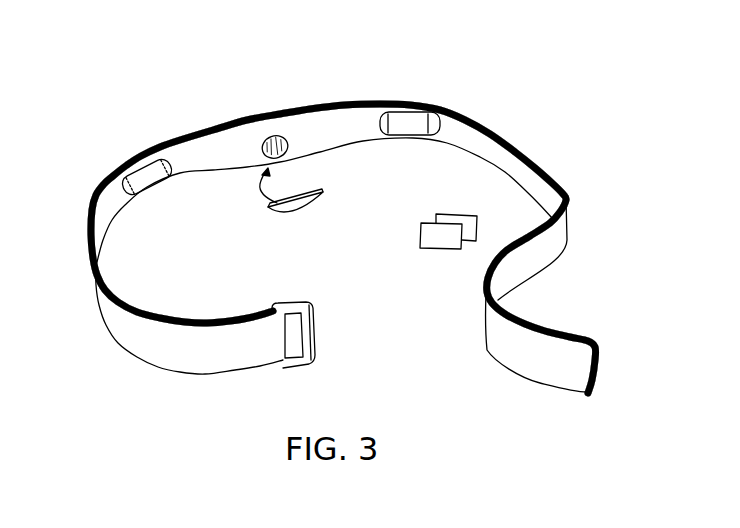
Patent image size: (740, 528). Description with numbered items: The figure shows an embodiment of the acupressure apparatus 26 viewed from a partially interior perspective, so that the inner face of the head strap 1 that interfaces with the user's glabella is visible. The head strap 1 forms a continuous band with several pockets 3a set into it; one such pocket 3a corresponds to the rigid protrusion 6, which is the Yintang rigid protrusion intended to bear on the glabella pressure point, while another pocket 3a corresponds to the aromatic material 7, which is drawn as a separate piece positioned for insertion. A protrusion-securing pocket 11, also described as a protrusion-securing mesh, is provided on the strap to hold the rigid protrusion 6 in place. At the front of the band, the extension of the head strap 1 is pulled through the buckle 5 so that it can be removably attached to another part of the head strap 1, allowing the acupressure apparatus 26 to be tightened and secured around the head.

The acupressure apparatus 26 is at (146, 84).
The head strap 1 is at (107, 322).
The pocket 3a is at (145, 172).
The protrusion-securing pocket 11 is at (277, 137).
The rigid protrusion 6 is at (267, 208).
The aromatic material 7 is at (420, 230).
The buckle 5 is at (316, 338).